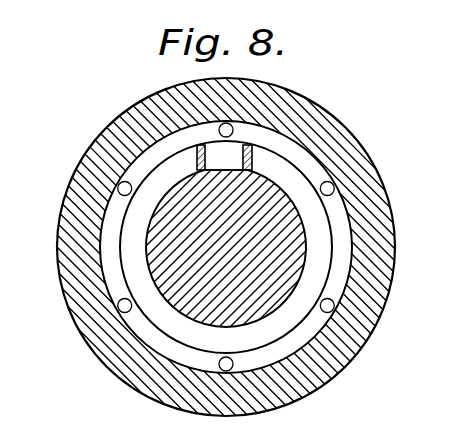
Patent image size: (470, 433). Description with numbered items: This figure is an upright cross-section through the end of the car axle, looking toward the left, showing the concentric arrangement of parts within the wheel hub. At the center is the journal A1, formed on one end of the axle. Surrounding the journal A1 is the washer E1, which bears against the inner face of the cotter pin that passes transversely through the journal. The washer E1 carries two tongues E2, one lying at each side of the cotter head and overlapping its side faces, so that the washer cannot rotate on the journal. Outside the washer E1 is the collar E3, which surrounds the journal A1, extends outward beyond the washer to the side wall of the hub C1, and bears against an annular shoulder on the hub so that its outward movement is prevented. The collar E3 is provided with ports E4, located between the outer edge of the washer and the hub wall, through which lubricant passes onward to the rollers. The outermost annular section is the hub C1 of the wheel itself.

The hub C1 is at (92, 334).
The collar E3 is at (336, 263).
The ports E4 is at (328, 312).
The washer E1 is at (265, 160).
The tongues E2 is at (205, 155).
The journal A1 is at (284, 237).